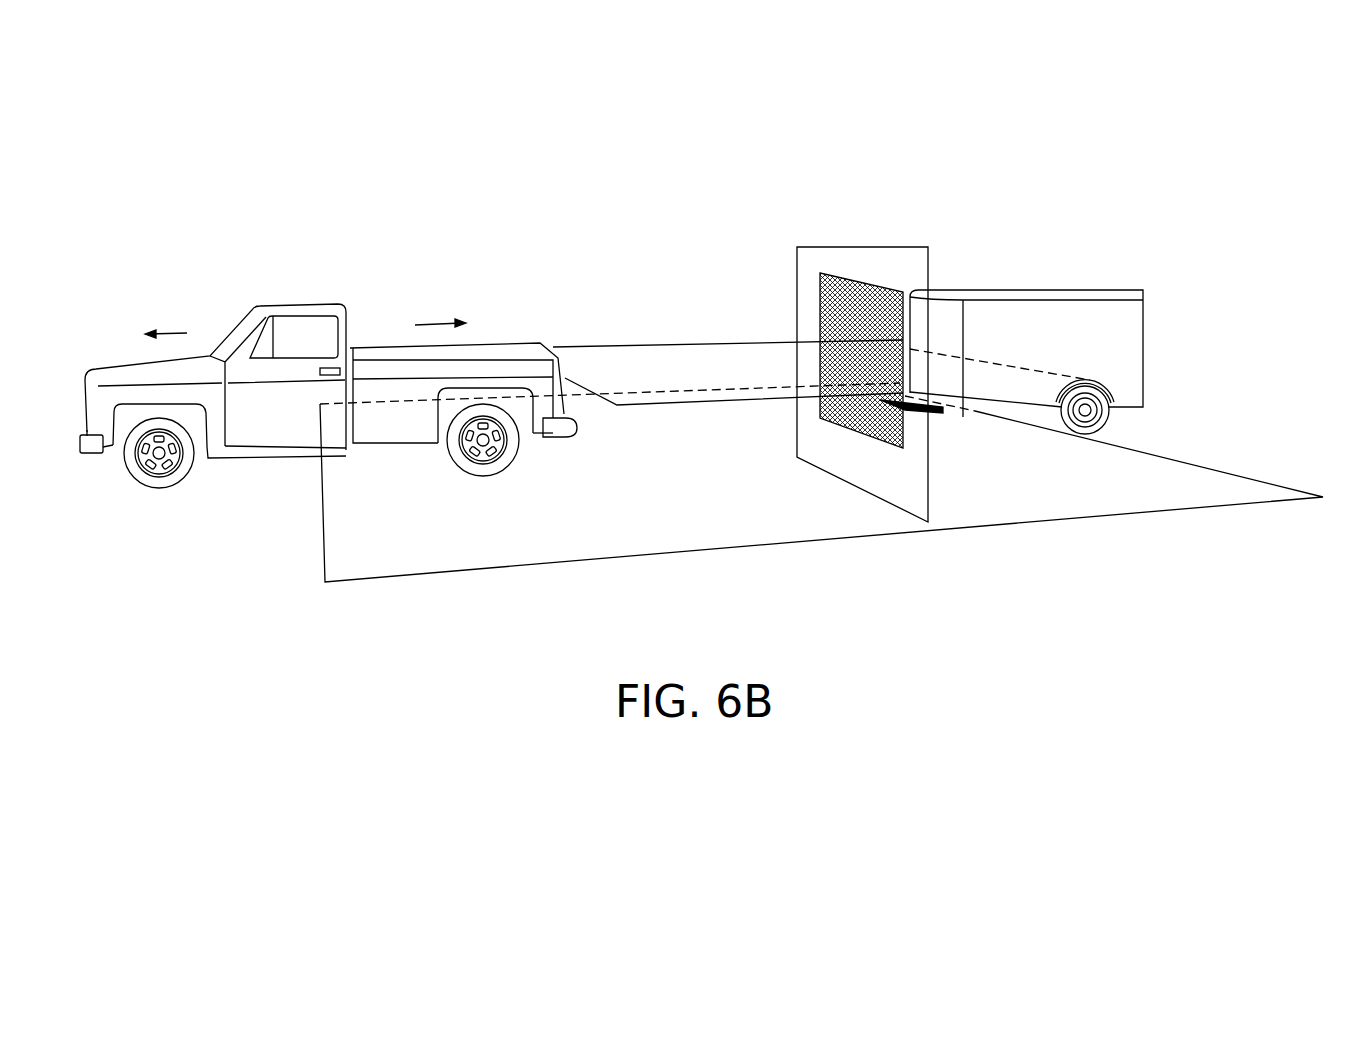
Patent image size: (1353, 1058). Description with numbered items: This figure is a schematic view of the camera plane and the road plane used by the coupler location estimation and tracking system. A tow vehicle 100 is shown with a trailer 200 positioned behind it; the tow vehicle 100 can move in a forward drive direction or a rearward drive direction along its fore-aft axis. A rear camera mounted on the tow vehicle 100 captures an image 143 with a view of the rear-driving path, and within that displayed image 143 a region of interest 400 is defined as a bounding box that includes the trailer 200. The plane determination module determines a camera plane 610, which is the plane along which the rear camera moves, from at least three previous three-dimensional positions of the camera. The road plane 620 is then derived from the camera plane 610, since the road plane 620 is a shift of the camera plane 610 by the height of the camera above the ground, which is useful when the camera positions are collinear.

The tow vehicle 100 is at (308, 302).
The trailer 200 is at (1023, 287).
The camera plane 610 is at (598, 346).
The road plane 620 is at (326, 572).
The region of interest 400 is at (903, 449).
The image 143 is at (930, 472).